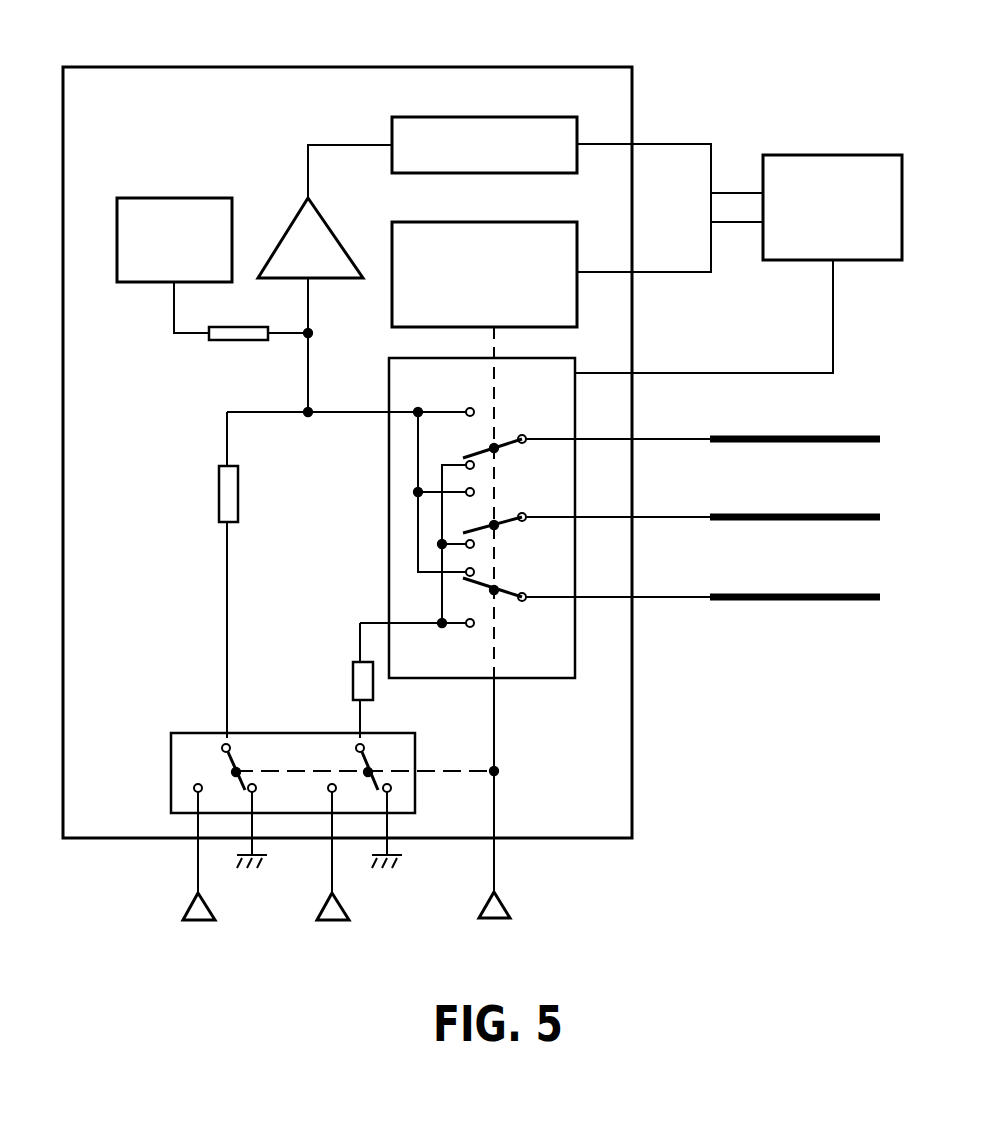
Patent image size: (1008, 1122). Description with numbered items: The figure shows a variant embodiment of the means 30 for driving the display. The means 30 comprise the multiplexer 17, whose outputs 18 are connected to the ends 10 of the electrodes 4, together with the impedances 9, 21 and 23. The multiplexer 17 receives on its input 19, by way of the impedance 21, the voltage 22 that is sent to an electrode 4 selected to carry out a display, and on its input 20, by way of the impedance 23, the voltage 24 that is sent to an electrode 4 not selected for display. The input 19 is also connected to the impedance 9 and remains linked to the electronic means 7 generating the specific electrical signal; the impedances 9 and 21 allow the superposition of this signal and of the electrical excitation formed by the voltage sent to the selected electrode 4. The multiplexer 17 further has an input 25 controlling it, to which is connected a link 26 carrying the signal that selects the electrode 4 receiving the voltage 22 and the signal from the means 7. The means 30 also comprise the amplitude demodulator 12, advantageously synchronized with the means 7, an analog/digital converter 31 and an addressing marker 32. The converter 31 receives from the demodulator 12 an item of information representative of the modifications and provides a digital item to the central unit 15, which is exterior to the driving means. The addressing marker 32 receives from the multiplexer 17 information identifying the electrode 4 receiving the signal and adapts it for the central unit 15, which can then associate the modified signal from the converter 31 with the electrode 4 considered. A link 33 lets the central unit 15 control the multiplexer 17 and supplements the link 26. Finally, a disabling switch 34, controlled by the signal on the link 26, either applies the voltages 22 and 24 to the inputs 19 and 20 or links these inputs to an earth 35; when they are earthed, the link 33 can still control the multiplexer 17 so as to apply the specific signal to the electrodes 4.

The means for driving the display 30 is at (530, 66).
The electronic means generating the specific electrical signal 7 is at (182, 198).
The amplitude demodulator 12 is at (343, 233).
The impedance 9 is at (238, 340).
The analog/digital converter 31 is at (428, 117).
The addressing marker 32 is at (515, 222).
The central unit 15 is at (822, 155).
The link 33 is at (833, 340).
The multiplexer 17 is at (388, 490).
The input 19 is at (388, 414).
The input 20 is at (389, 622).
The outputs 18 is at (575, 439).
The ends of the electrodes 10 is at (712, 437).
The electrodes 4 is at (847, 436).
The input controlling the multiplexer 25 is at (496, 680).
The impedance 21 is at (219, 478).
The impedance 23 is at (353, 684).
The disabling switch 34 is at (171, 778).
The earth 35 is at (267, 857).
The voltage 22 is at (190, 904).
The voltage 24 is at (345, 912).
The link 26 is at (508, 904).